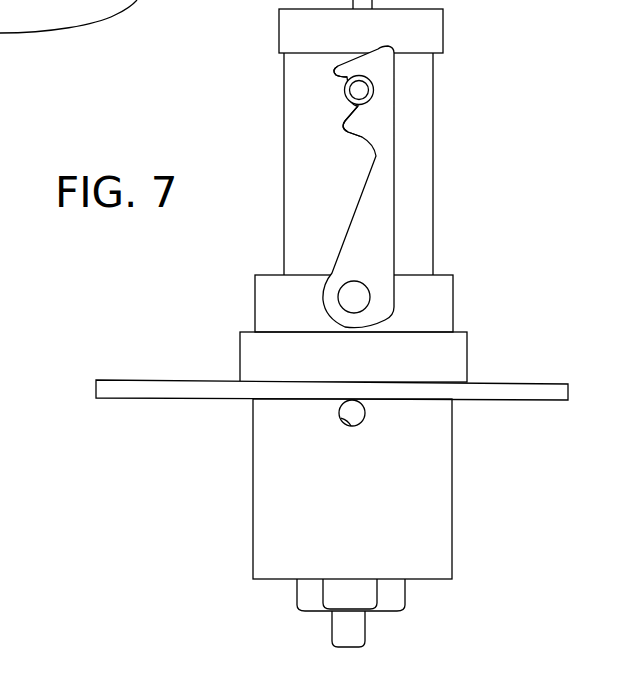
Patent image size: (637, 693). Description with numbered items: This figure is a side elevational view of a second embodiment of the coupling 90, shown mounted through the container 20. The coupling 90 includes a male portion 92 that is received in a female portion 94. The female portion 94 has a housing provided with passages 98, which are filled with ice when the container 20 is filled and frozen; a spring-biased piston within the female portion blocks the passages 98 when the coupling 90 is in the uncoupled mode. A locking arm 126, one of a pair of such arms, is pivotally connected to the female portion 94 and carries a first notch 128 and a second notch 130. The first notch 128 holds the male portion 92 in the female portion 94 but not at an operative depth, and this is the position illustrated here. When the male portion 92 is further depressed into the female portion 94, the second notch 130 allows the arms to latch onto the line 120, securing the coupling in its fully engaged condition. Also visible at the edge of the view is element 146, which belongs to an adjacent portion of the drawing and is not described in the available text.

The container 20 is at (184, 381).
The coupling 90 is at (386, 191).
The male portion 92 is at (436, 147).
The female portion 94 is at (453, 497).
The passages 98 is at (340, 418).
The line 120 is at (350, 104).
The locking arm 126 is at (393, 246).
The first notch 128 is at (336, 87).
The second notch 130 is at (352, 150).
The guide 146 is at (68, 16).